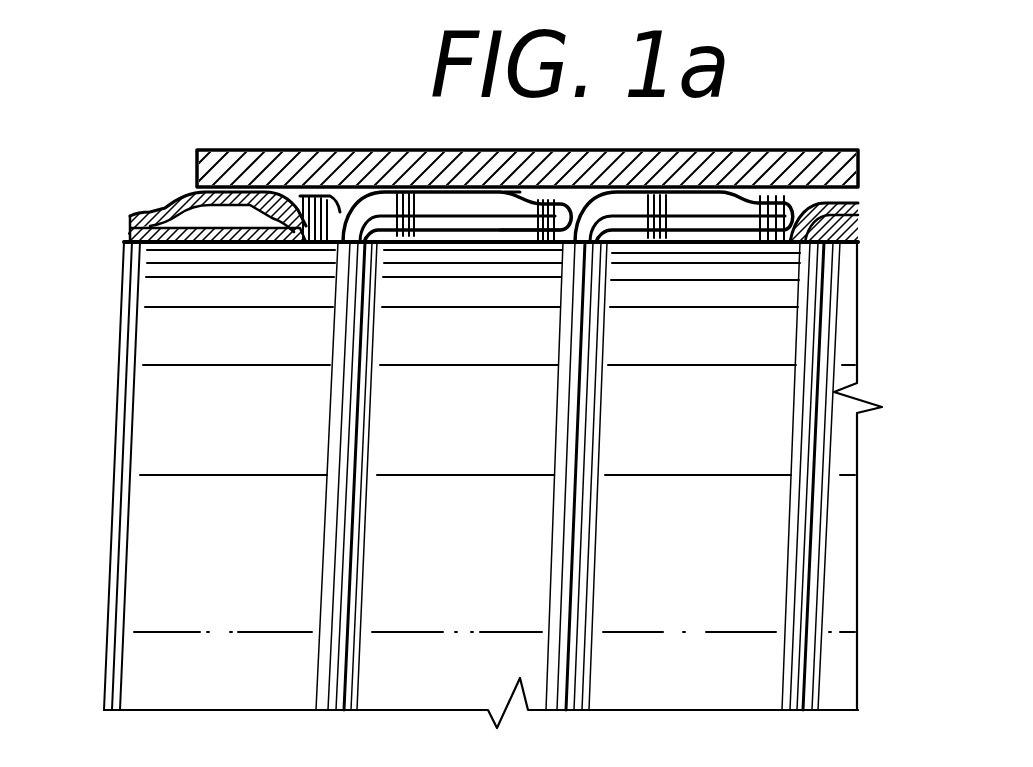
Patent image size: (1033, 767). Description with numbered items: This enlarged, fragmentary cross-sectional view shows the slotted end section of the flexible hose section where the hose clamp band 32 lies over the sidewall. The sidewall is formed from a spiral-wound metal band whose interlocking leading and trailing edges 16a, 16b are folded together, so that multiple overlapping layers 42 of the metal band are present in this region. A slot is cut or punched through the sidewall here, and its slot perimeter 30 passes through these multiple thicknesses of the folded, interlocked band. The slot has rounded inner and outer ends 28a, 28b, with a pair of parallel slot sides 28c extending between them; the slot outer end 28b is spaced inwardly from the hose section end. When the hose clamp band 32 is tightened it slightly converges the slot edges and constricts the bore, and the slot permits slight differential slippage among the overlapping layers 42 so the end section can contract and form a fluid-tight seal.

The hose clamp band 32 is at (858, 149).
The overlapping layers 42 is at (172, 192).
The slot outer end 28b is at (317, 244).
The trailing edge 16b is at (337, 246).
The leading edge 16a is at (368, 278).
The slot sides 28c is at (527, 226).
The slot perimeter 30 is at (657, 233).
The slot inner end 28a is at (802, 247).